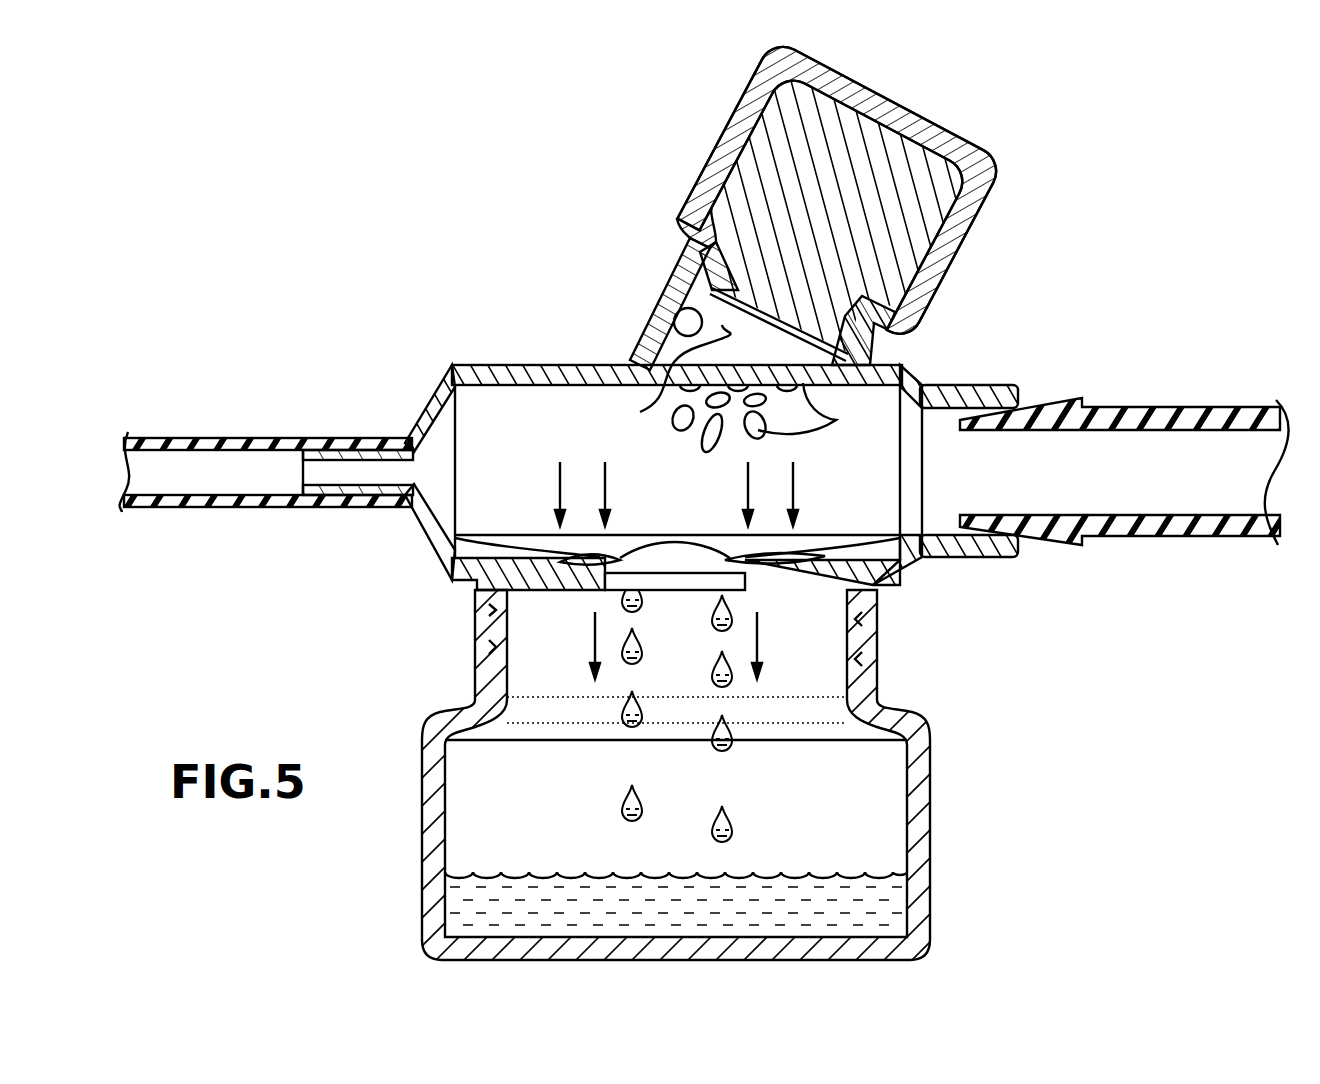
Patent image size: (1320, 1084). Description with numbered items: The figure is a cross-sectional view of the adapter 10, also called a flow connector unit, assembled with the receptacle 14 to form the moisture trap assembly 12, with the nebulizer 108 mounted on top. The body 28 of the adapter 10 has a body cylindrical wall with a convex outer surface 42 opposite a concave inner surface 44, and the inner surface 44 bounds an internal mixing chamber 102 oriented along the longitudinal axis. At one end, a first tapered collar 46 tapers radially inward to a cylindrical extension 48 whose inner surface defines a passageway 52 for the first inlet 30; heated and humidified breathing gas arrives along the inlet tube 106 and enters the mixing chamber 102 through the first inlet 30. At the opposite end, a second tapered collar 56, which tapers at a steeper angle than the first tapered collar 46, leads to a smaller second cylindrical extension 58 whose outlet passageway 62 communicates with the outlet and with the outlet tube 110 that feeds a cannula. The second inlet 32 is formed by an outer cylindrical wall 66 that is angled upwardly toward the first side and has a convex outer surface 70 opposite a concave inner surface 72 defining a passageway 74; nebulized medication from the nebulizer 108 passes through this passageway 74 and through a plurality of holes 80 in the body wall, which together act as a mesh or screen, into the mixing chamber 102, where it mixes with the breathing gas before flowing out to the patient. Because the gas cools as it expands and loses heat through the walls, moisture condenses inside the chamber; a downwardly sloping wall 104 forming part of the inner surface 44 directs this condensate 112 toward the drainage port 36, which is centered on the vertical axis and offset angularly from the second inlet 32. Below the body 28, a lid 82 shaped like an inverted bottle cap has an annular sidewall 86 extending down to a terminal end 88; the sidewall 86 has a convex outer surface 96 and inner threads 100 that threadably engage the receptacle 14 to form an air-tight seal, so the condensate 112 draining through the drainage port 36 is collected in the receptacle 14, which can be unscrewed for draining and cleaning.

The adapter 10 is at (492, 232).
The moisture trap assembly 12 is at (663, 775).
The receptacle 14 is at (663, 775).
The body 28 is at (747, 441).
The first inlet 30 is at (1024, 552).
The second inlet 32 is at (686, 235).
The drainage port 36 is at (684, 574).
The convex outer surface 42 is at (553, 365).
The concave inner surface 44 is at (492, 388).
The first tapered collar 46 is at (912, 566).
The cylindrical extension 48 is at (1000, 390).
The passageway 52 is at (990, 384).
The second tapered collar 56 is at (423, 456).
The second cylindrical extension 58 is at (333, 440).
The outlet passageway 62 is at (358, 470).
The outer cylindrical wall 66 is at (672, 266).
The convex outer surface 70 is at (676, 314).
The concave inner surface 72 is at (660, 335).
The passageway 74 is at (668, 386).
The plurality of holes 80 is at (836, 420).
The lid 82 is at (486, 631).
The annular sidewall 86 is at (676, 718).
The terminal end 88 is at (880, 699).
The convex outer surface 96 is at (877, 636).
The threads 100 is at (487, 650).
The mixing chamber 102 is at (576, 430).
The sloping wall 104 is at (512, 551).
The inlet tube 106 is at (1226, 406).
The nebulizer 108 is at (796, 204).
The outlet tube 110 is at (160, 440).
The liquid droplets 112 is at (630, 560).